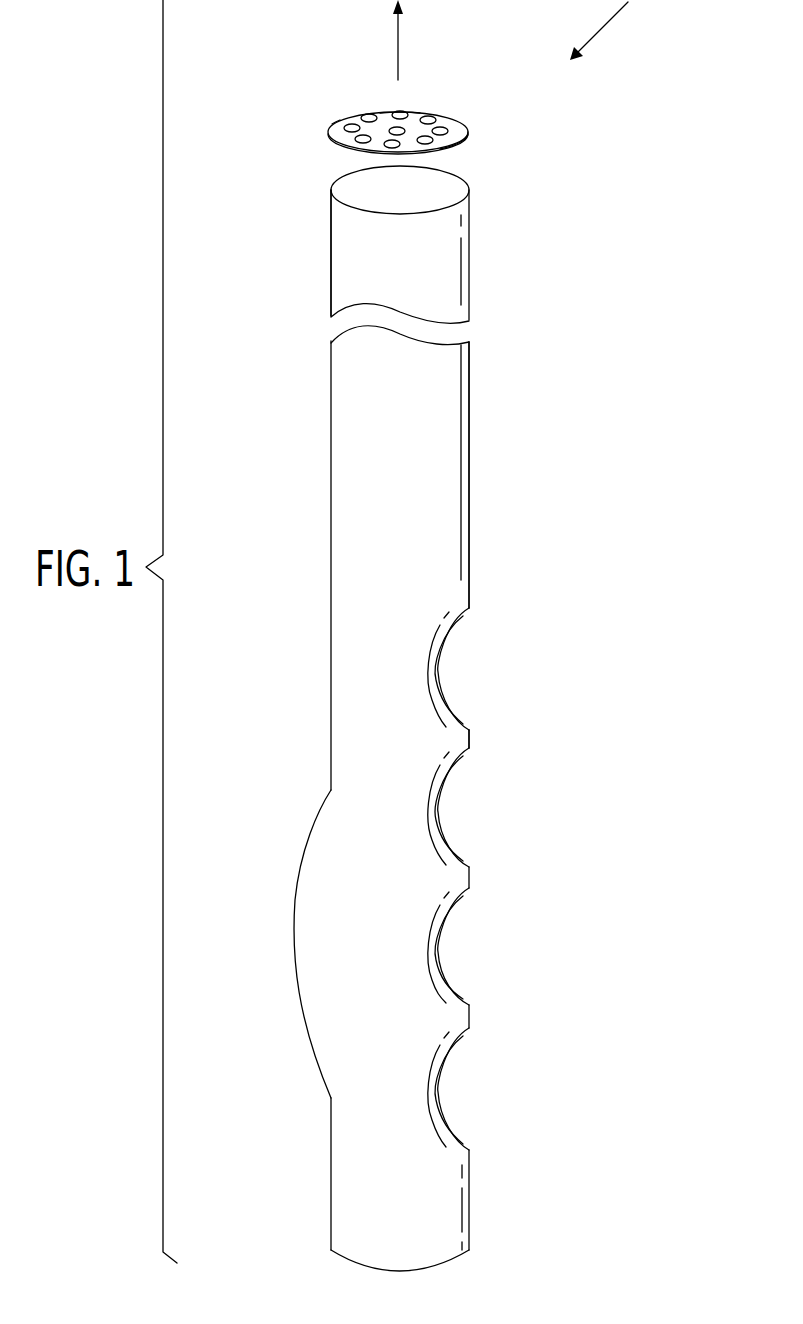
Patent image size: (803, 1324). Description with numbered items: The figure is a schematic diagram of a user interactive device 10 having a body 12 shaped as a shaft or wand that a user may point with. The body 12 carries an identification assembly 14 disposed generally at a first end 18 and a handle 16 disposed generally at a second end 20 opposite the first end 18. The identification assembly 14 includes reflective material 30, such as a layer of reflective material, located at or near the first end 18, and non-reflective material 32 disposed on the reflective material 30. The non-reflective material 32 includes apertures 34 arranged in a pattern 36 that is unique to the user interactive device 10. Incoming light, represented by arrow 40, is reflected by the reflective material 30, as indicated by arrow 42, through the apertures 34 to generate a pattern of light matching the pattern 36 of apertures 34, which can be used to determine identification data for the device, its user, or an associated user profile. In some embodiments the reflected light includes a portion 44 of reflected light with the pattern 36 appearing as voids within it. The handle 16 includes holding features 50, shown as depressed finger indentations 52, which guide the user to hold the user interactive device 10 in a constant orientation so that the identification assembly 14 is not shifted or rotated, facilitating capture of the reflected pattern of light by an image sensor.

The user interactive device 10 is at (220, 83).
The body 12 is at (450, 460).
The identification assembly 14 is at (303, 64).
The handle 16 is at (582, 566).
The first end 18 is at (490, 148).
The second end 20 is at (618, 690).
The reflective material 30 is at (453, 193).
The non-reflective material 32 is at (333, 137).
The apertures 34 is at (425, 125).
The pattern 36 is at (414, 102).
The arrow representing incoming light 40 is at (603, 28).
The arrow representing reflected light 42 is at (398, 43).
The portion 44 is at (348, 116).
The holding features 50 is at (293, 707).
The depressed finger indentations 52 is at (445, 808).